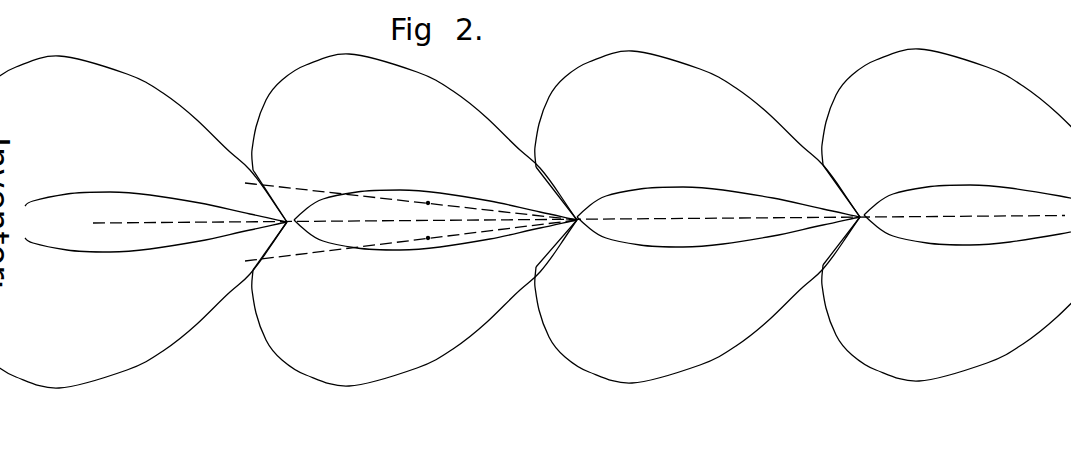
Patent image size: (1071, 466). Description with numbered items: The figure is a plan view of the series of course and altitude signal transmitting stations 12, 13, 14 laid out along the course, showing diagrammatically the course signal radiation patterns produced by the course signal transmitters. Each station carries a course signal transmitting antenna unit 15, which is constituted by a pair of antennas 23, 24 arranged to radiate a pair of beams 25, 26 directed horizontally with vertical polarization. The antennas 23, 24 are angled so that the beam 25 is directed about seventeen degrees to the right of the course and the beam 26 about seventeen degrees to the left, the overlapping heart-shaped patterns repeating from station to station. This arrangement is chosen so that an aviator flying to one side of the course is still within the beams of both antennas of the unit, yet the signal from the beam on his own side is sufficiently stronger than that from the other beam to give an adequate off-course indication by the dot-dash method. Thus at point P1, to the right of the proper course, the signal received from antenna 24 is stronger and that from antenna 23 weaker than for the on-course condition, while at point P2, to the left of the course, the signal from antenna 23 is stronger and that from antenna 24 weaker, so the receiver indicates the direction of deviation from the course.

The course and signal transmitting station 12 is at (289, 226).
The course and signal transmitting station 13 is at (580, 226).
The course and signal transmitting station 14 is at (862, 221).
The course signal transmitting antenna unit 15 is at (586, 219).
The antenna 23 is at (586, 213).
The antenna 24 is at (584, 225).
The beam 25 is at (414, 138).
The beam 26 is at (414, 303).
The point P1 is at (427, 238).
The point P2 is at (427, 204).